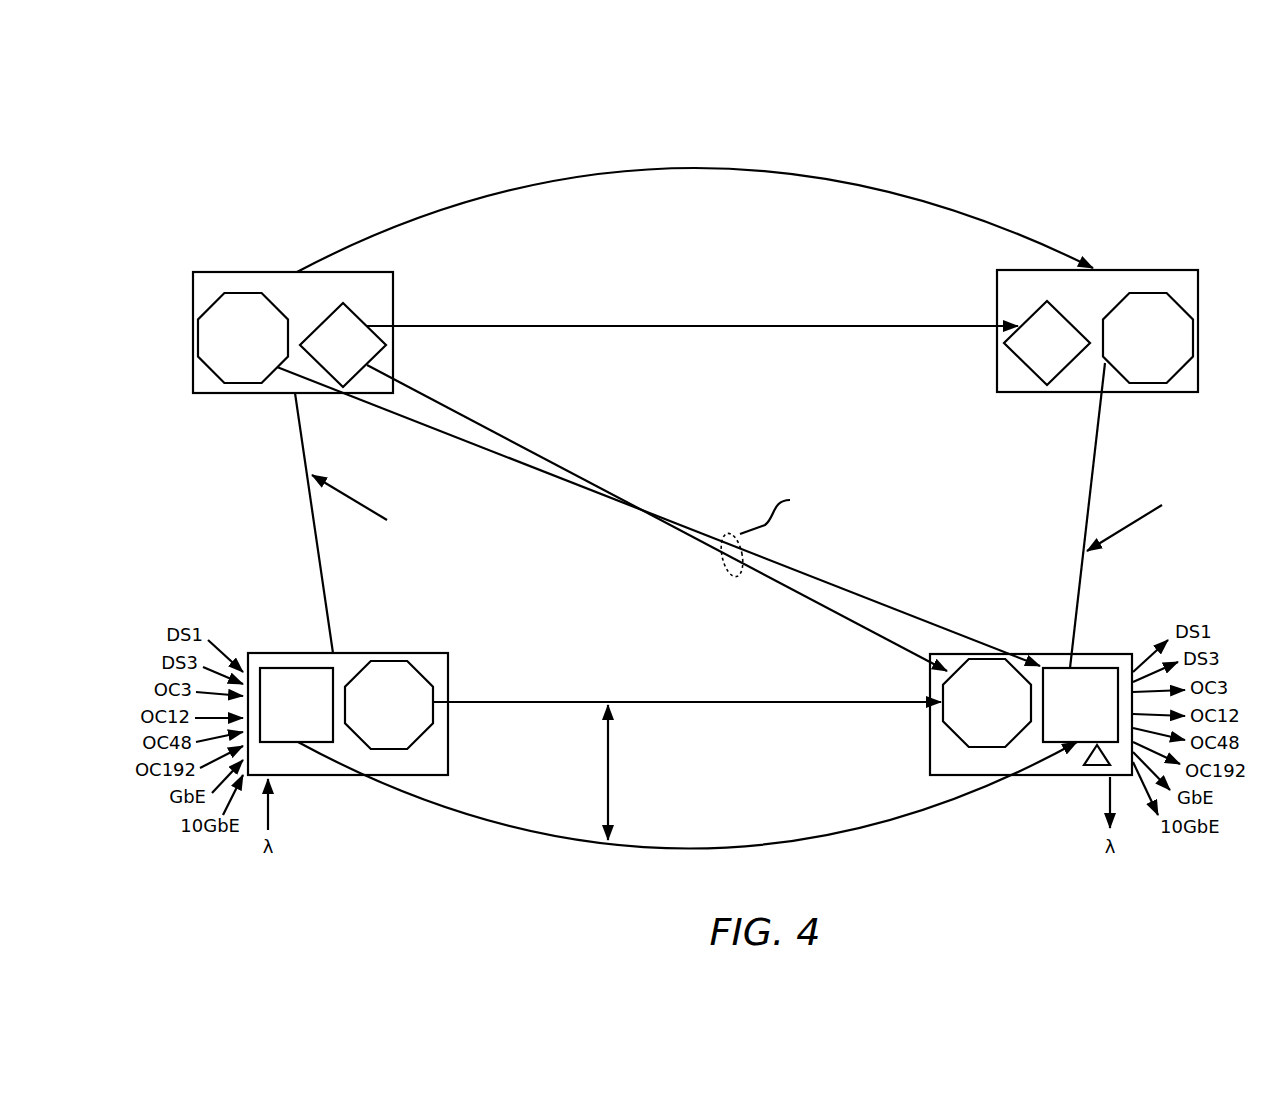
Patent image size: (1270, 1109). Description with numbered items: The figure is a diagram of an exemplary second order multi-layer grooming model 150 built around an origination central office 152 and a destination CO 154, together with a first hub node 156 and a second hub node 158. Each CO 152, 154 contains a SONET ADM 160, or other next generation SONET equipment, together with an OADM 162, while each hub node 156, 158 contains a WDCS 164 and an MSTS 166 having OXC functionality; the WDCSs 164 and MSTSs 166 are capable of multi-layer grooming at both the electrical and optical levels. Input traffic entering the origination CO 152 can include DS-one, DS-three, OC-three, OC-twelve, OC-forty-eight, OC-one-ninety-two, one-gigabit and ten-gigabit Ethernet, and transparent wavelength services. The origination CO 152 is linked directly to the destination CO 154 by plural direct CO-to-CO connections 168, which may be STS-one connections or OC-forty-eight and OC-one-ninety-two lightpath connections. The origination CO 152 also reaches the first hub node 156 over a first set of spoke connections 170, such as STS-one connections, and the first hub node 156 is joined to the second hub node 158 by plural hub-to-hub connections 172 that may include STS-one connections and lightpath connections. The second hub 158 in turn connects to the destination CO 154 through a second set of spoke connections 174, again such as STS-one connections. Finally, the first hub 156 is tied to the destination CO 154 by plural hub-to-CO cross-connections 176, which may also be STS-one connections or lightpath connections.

The second order multi-layer grooming model 150 is at (1110, 112).
The origination central office 152 is at (450, 728).
The destination CO 154 is at (1075, 775).
The first hub node 156 is at (232, 393).
The second hub node 158 is at (1178, 270).
The SONET ADM 160 is at (310, 676).
The OADM 162 is at (405, 676).
The WDCS 164 is at (215, 325).
The MSTS 166 is at (355, 322).
The direct CO-to-CO connections 168 is at (510, 702).
The first set of spoke connections 170 is at (322, 605).
The hub-to-hub connections 172 is at (510, 190).
The Z spoke link 174 is at (1088, 487).
The hub-to-CO cross-connections 176 is at (645, 510).